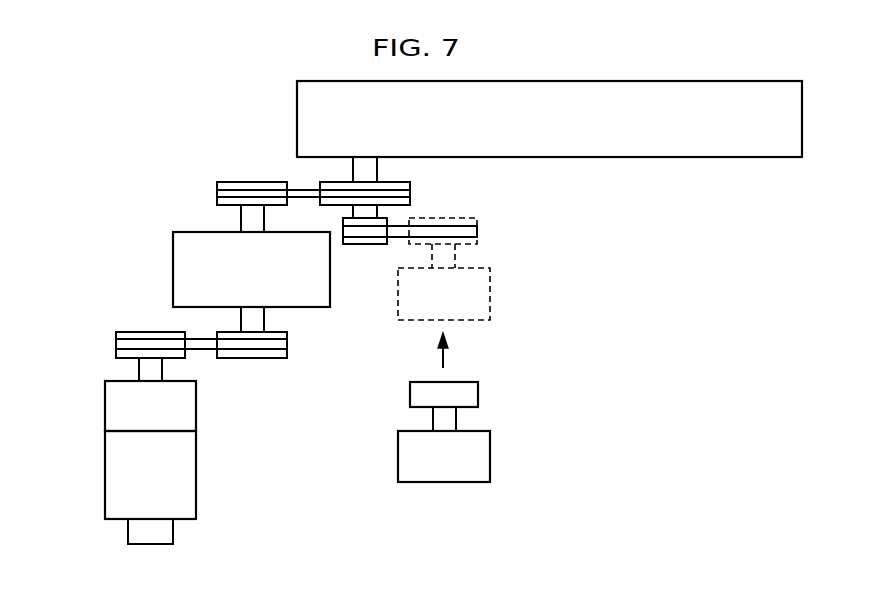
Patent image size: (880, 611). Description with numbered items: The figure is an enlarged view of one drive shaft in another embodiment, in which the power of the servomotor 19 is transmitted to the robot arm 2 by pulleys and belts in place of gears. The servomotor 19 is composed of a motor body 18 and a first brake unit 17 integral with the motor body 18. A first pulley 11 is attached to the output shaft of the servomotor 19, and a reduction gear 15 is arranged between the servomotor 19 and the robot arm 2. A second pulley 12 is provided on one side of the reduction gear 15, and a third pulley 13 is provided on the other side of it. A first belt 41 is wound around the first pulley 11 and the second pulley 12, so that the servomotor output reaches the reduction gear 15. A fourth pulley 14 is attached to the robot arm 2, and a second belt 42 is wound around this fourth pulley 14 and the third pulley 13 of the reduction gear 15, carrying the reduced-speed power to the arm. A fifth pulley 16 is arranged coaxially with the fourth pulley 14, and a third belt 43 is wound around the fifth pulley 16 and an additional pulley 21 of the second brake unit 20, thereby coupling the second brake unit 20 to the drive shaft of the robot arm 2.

The robot arm 2 is at (753, 138).
The first pulley 11 is at (123, 332).
The second pulley 12 is at (278, 332).
The third pulley 13 is at (225, 181).
The fourth pulley 14 is at (400, 180).
The reduction gear 15 is at (187, 261).
The fifth pulley 16 is at (348, 244).
The first brake unit 17 is at (196, 415).
The motor body 18 is at (196, 467).
The servomotor 19 is at (147, 462).
The second brake unit 20 is at (490, 447).
The additional pulley 21 is at (478, 392).
The first belt 41 is at (203, 349).
The second belt 42 is at (297, 188).
The third belt 43 is at (400, 244).